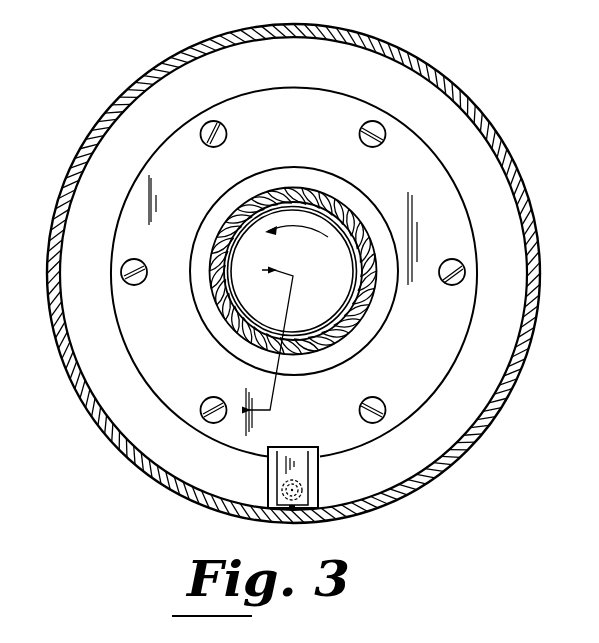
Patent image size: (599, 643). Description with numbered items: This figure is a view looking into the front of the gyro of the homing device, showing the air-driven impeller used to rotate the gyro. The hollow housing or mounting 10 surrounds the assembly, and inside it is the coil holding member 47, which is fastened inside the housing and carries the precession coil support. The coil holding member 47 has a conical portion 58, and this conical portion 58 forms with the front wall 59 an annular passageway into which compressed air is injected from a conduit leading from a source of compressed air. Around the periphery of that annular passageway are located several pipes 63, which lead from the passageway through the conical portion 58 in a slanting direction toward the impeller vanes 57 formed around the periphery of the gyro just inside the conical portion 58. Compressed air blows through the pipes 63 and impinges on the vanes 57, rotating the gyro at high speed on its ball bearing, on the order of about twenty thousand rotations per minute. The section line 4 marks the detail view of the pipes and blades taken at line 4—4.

The housing 10 is at (440, 73).
The coil holding member 47 is at (417, 135).
The conical portion 58 is at (360, 213).
The front wall 59 is at (422, 202).
The pipes 63 is at (303, 190).
The vanes 57 is at (353, 312).
The section line 4- 4 is at (260, 336).